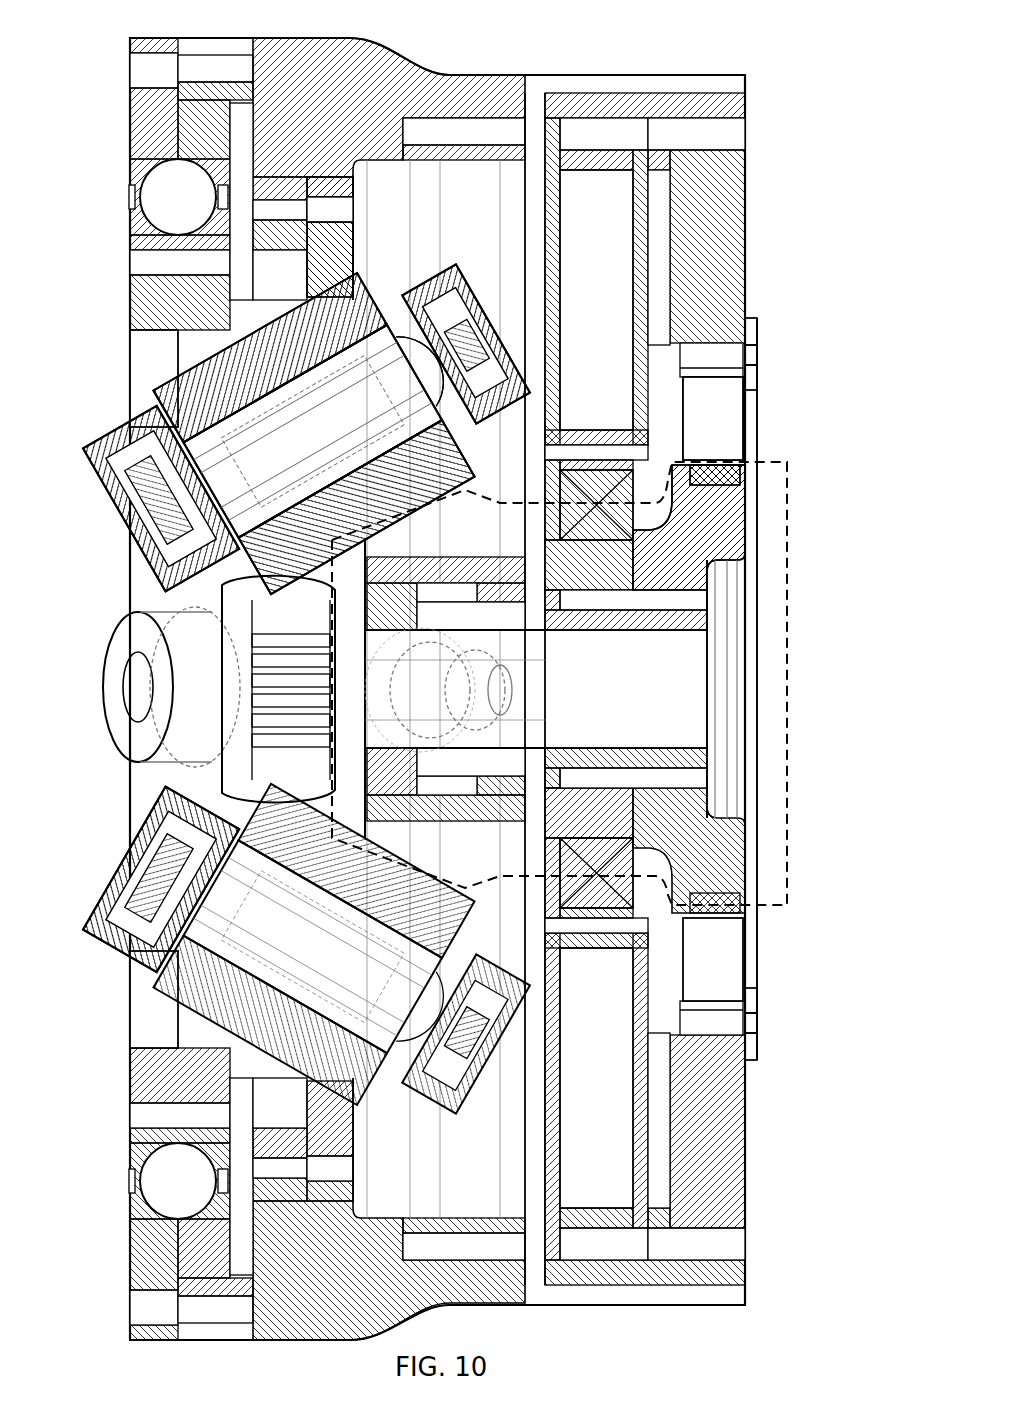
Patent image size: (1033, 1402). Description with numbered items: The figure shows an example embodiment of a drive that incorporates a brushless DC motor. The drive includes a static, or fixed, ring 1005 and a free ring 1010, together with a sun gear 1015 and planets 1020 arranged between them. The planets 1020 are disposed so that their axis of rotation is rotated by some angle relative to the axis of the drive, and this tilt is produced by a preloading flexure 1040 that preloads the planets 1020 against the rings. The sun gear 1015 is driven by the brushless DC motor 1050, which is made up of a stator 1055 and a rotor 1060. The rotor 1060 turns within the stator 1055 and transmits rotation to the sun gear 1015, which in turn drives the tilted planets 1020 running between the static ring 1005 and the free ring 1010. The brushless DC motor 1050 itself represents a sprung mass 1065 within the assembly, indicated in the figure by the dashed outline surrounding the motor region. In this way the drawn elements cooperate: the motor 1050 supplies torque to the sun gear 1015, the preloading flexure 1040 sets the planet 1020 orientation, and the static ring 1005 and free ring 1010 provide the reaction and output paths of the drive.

The static ring 1005 is at (332, 235).
The free ring 1010 is at (162, 366).
The sun gear 1015 is at (395, 645).
The planet 1020 is at (145, 500).
The preloading flexure 1040 is at (620, 308).
The brushless DC motor 1050 is at (849, 342).
The stator 1055 is at (730, 433).
The rotor 1060 is at (730, 493).
The sprung mass 1065 is at (799, 849).